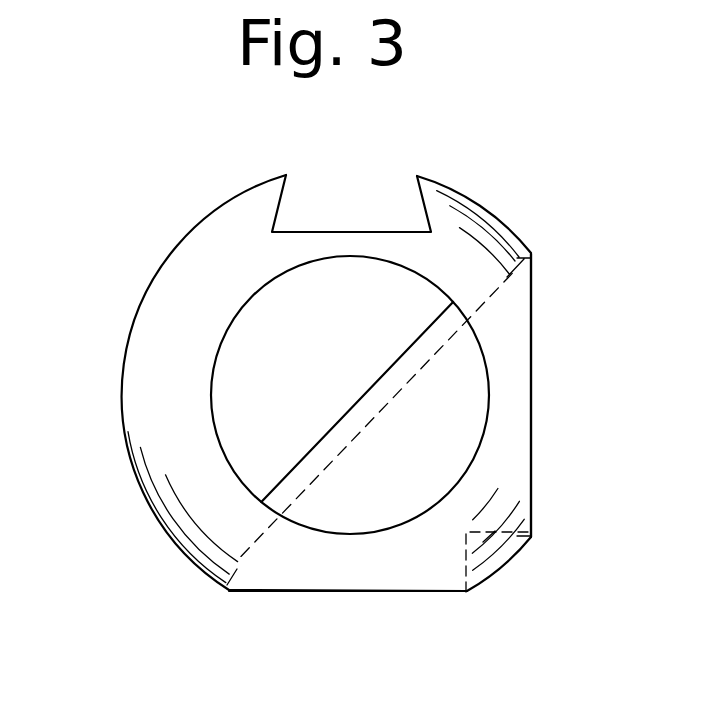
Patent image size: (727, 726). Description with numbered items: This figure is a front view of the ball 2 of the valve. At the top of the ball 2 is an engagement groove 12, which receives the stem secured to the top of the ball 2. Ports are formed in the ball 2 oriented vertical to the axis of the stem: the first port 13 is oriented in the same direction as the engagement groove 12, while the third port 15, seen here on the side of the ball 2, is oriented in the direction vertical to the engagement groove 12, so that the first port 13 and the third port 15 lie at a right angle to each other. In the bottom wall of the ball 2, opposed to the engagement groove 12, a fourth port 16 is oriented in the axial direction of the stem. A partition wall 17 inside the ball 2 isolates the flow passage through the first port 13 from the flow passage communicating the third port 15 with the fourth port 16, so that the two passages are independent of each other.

The ball 2 is at (118, 388).
The engagement groove 12 is at (347, 232).
The first port 13 is at (243, 452).
The third port 15 is at (532, 387).
The fourth port 16 is at (348, 592).
The partition wall 17 is at (320, 507).